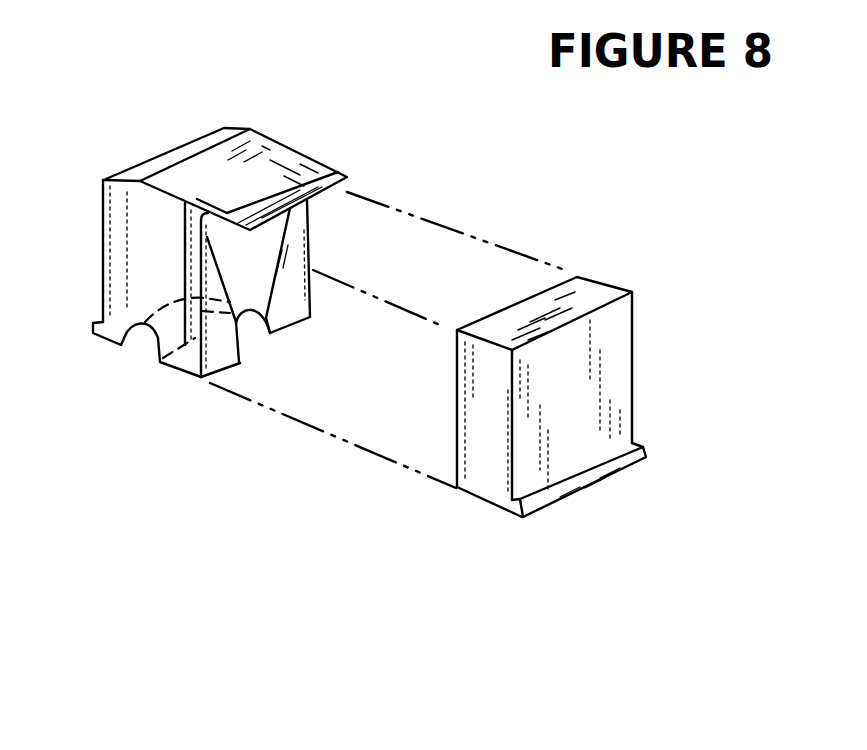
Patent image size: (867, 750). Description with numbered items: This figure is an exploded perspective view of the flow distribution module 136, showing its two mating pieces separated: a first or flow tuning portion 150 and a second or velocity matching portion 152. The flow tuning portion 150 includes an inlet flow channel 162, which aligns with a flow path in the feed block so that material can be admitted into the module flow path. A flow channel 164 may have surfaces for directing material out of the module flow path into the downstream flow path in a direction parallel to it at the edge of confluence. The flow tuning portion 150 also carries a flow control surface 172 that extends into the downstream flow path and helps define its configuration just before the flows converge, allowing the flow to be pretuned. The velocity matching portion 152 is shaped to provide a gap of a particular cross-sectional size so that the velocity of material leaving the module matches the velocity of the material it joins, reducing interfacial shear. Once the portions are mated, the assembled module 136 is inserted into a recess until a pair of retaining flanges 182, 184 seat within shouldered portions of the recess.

The flow distribution module 136 is at (156, 408).
The flow tuning portion 150 is at (151, 163).
The flow control surface 172 is at (276, 150).
The flow channel 164 is at (262, 249).
The inlet flow channel 162 is at (146, 328).
The retaining flange 182 is at (96, 323).
The velocity matching portion 152 is at (625, 414).
The retaining flange 184 is at (532, 500).